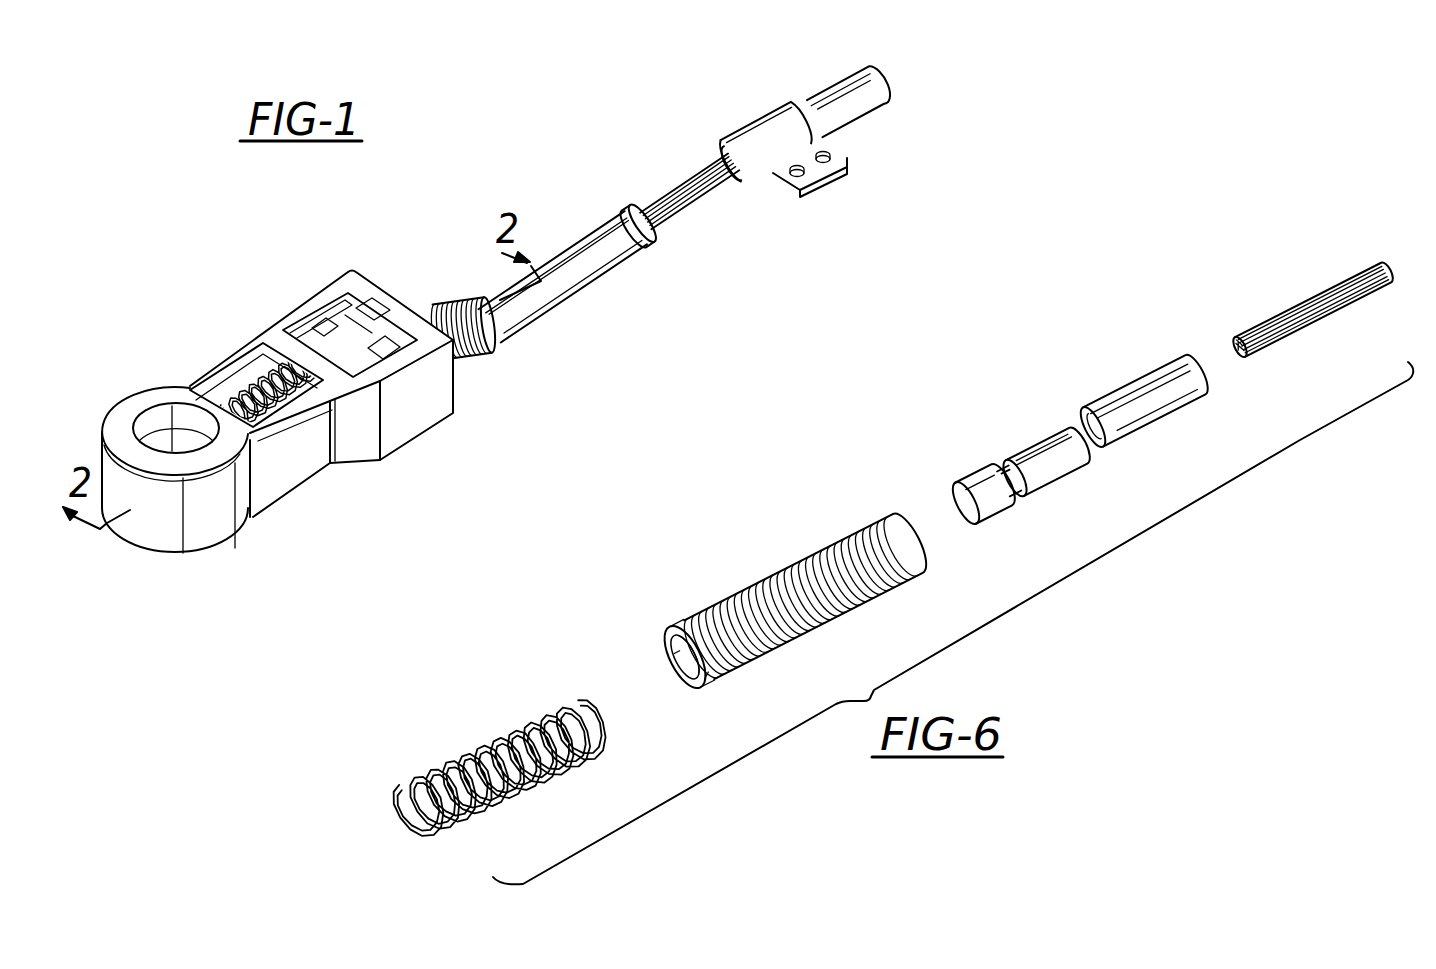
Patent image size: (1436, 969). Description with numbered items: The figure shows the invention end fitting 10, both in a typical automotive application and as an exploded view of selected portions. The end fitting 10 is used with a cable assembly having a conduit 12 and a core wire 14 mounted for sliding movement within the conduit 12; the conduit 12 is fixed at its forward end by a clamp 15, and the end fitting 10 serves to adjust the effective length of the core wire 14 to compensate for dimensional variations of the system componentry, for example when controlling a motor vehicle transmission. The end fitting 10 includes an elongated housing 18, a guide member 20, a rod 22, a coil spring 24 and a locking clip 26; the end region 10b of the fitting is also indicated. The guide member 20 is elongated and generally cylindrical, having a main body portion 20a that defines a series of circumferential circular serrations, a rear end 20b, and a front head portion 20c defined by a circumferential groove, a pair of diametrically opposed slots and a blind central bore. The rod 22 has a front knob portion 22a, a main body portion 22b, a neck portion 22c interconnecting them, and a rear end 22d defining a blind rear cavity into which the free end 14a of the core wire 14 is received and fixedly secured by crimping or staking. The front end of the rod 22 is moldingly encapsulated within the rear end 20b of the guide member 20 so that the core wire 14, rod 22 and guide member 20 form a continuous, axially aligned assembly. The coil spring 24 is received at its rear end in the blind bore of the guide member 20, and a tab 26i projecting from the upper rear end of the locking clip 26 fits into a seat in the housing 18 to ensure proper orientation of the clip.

In FIG. 1, the end fitting 10 is at (303, 270).
In FIG. 1, the ring end of terminal body 10b is at (130, 388).
In FIG. 1, the conduit 12 is at (862, 110).
In FIG. 1, the core wire 14 is at (718, 197).
In FIG. 6, the core wire 14 is at (1313, 300).
In FIG. 6, the free end of core wire 14a is at (1255, 350).
In FIG. 1, the clamp 15 is at (780, 110).
In FIG. 1, the housing 18 is at (189, 350).
In FIG. 1, the guide member 20 is at (485, 366).
In FIG. 6, the guide member 20 is at (733, 587).
In FIG. 6, the main body portion 20a is at (808, 568).
In FIG. 1, the rear end 20b is at (528, 304).
In FIG. 6, the front head portion 20c is at (700, 621).
In FIG. 1, the rod 22 is at (652, 238).
In FIG. 6, the rod 22 is at (1022, 434).
In FIG. 6, the front knob portion 22a is at (973, 484).
In FIG. 6, the main body portion 22b is at (1073, 431).
In FIG. 6, the neck portion 22c is at (993, 467).
In FIG. 6, the rear end 22d is at (1159, 378).
In FIG. 1, the coil spring 24 is at (250, 392).
In FIG. 6, the coil spring 24 is at (465, 745).
In FIG. 1, the locking clip 26 is at (344, 331).
In FIG. 1, the tab 26i is at (381, 318).